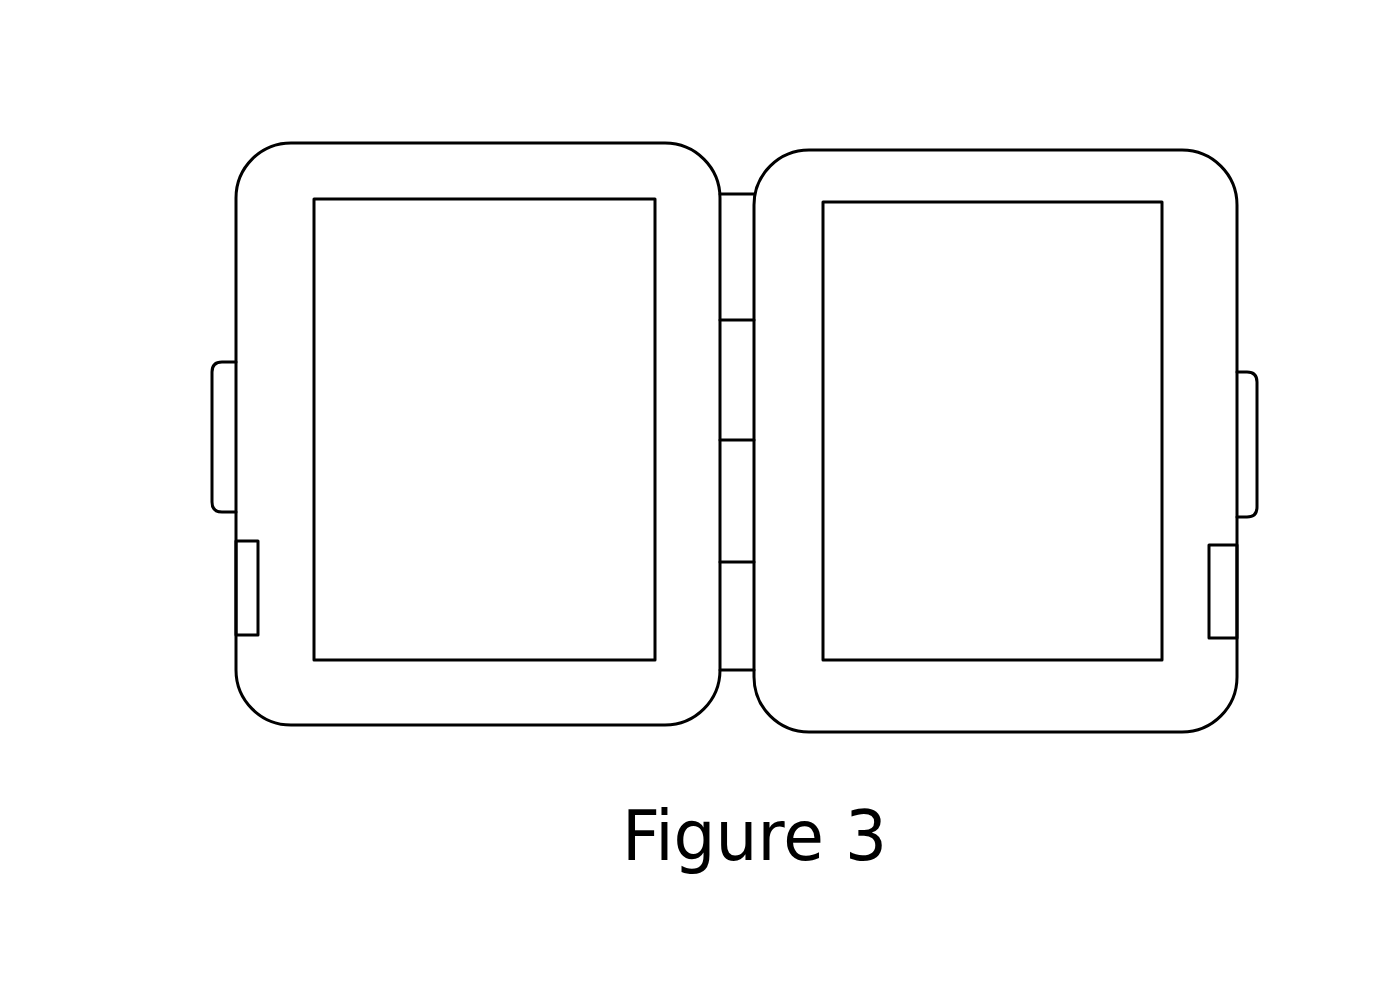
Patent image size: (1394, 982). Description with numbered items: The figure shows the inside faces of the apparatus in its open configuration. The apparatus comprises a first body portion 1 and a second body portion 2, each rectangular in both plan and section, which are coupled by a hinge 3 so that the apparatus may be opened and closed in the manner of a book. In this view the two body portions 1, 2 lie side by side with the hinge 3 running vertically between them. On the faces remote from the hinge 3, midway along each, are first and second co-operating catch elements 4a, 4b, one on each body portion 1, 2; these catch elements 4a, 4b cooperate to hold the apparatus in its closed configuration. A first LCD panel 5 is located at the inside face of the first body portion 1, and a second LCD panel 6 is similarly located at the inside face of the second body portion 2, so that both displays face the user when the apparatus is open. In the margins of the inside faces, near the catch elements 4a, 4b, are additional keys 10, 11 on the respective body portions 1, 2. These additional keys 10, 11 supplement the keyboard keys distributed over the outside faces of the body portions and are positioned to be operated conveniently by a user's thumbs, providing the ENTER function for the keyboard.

The first body portion 1 is at (362, 700).
The second body portion 2 is at (1107, 705).
The hinge 3 is at (733, 208).
The first catch element 4a is at (221, 408).
The second catch element 4b is at (1246, 431).
The first LCD panel 5 is at (425, 238).
The second LCD panel 6 is at (1071, 252).
The additional key 10 is at (244, 587).
The additional key 11 is at (1220, 590).